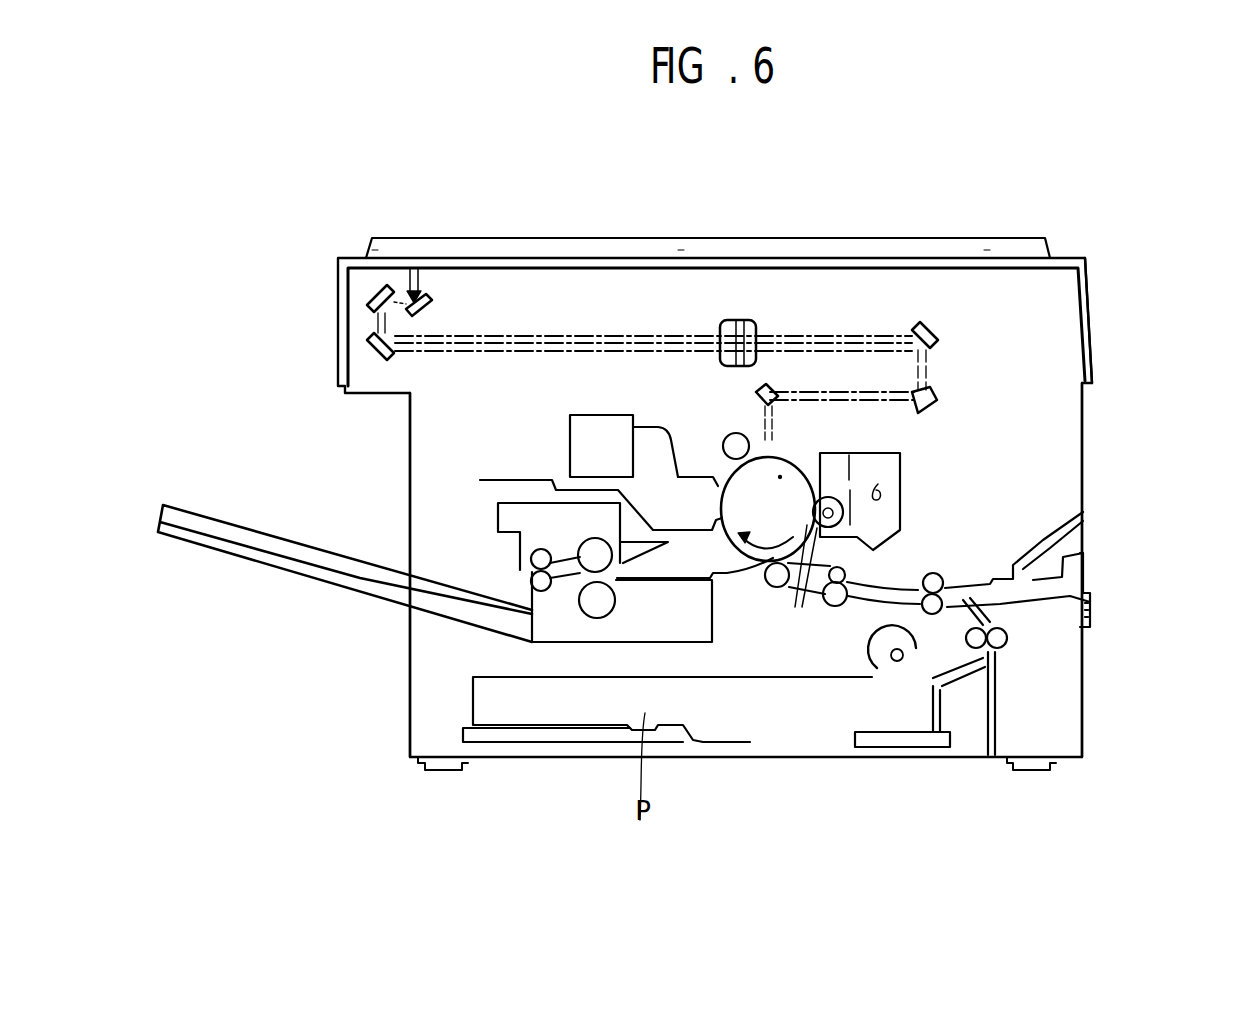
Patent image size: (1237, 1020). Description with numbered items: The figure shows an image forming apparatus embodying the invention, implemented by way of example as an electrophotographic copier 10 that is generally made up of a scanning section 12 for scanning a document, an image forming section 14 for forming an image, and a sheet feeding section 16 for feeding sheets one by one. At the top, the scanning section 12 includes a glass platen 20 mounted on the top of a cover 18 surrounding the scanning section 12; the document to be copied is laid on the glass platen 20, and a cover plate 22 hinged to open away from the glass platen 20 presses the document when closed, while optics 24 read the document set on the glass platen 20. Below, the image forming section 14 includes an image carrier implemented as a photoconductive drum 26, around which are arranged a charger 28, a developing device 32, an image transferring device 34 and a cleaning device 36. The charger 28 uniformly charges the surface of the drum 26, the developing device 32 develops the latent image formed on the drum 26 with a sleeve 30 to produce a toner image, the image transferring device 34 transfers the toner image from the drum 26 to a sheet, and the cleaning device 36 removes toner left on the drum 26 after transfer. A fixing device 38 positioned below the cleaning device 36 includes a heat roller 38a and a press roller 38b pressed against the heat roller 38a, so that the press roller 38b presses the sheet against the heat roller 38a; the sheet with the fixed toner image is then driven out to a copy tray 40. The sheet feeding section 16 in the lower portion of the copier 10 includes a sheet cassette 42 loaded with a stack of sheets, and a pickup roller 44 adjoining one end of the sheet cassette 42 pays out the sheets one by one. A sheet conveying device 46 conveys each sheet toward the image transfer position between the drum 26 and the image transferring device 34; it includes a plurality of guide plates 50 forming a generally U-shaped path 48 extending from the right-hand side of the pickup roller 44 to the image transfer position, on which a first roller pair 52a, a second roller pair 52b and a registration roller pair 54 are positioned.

The copier 10 is at (1087, 222).
The scanning section 12 is at (1094, 322).
The image forming section 14 is at (812, 436).
The sheet feeding section 16 is at (452, 701).
The cover 18 is at (1093, 368).
The glass platen 20 is at (693, 238).
The cover plate 22 is at (747, 252).
The optics 24 is at (474, 305).
The photoconductive drum 26 is at (780, 477).
The charger 28 is at (738, 418).
The sleeve 30 is at (797, 607).
The developing device 32 is at (905, 541).
The image transferring device 34 is at (774, 590).
The cleaning device 36 is at (651, 447).
The fixing device 38 is at (497, 503).
The heat roller 38a is at (594, 552).
The press roller 38b is at (597, 602).
The copy tray 40 is at (260, 557).
The sheet cassette 42 is at (555, 742).
The pickup roller 44 is at (896, 661).
The sheet conveying device 46 is at (993, 603).
The path 48 is at (858, 592).
The guide plates 50 is at (967, 692).
The first roller pair 52a is at (1005, 644).
The second roller pair 52b is at (1090, 603).
The registration roller pair 54 is at (829, 606).